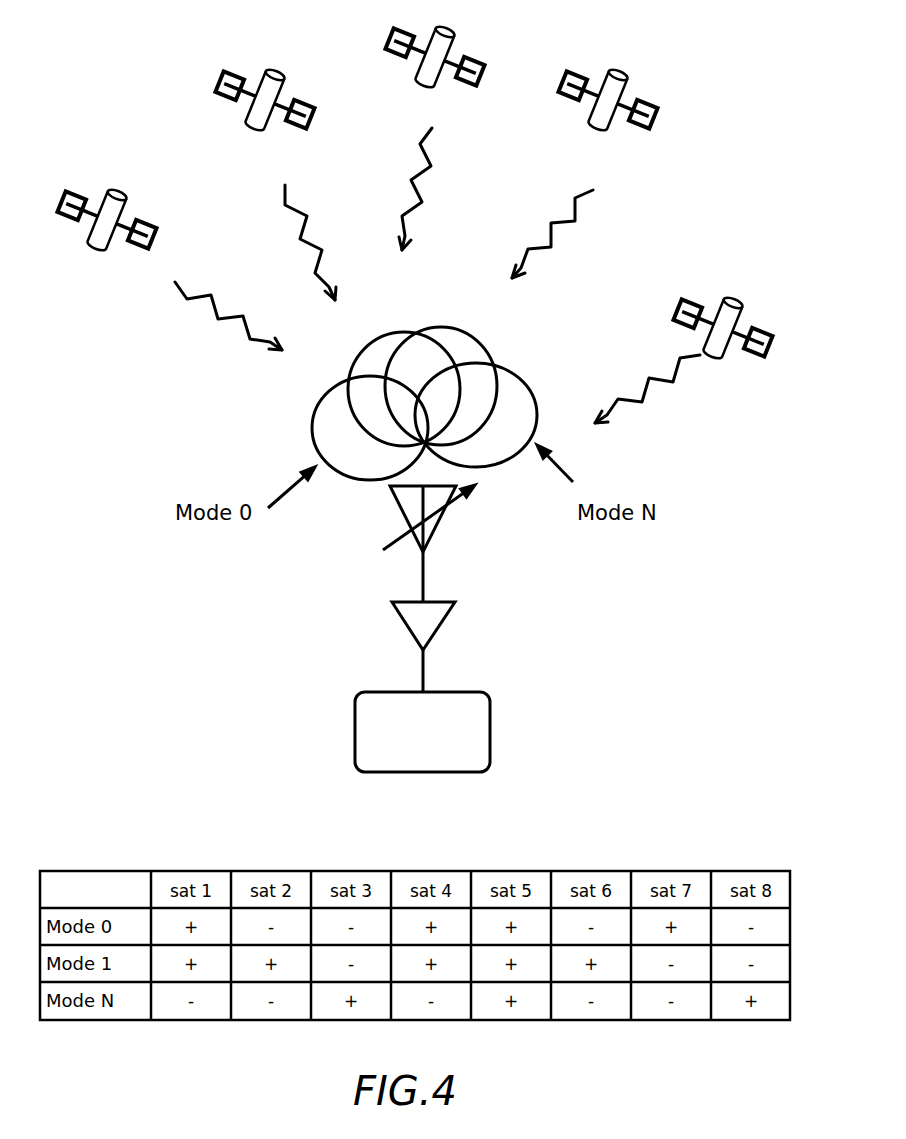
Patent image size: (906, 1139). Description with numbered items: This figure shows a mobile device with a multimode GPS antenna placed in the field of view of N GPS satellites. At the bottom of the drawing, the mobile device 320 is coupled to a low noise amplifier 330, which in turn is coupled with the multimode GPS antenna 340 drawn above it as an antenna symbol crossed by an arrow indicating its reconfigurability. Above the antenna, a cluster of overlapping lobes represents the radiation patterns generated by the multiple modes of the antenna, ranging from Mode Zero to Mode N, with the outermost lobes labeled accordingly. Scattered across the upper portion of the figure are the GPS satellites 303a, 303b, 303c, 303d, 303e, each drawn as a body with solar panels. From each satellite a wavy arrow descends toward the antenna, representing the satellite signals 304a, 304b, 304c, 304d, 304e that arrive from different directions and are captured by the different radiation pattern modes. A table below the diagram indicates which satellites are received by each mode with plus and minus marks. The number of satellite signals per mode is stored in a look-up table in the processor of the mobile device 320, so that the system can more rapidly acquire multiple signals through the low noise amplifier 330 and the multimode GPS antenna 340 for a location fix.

The GPS satellite 303a is at (120, 190).
The GPS satellite 303b is at (275, 72).
The GPS satellite 303c is at (448, 33).
The GPS satellite 303d is at (627, 72).
The GPS satellite 303e is at (740, 305).
The satellite signal 304a is at (232, 310).
The satellite signal 304b is at (307, 210).
The satellite signal 304c is at (435, 163).
The satellite signal 304d is at (578, 220).
The satellite signal 304e is at (640, 393).
The multimode GPS antenna 340 is at (448, 513).
The low noise amplifier 330 is at (440, 630).
The mobile device 320 is at (490, 742).